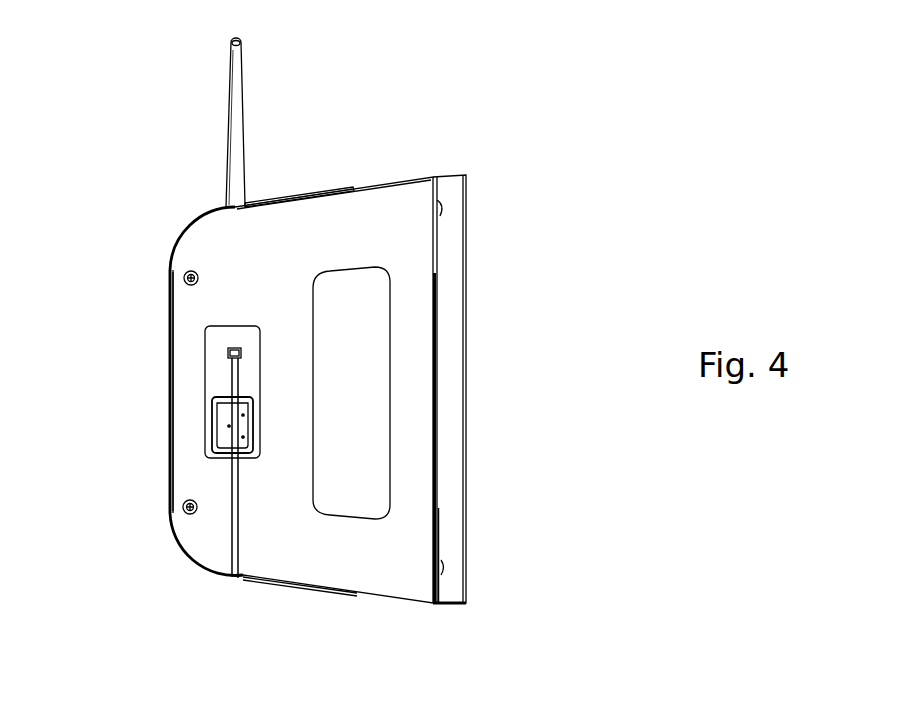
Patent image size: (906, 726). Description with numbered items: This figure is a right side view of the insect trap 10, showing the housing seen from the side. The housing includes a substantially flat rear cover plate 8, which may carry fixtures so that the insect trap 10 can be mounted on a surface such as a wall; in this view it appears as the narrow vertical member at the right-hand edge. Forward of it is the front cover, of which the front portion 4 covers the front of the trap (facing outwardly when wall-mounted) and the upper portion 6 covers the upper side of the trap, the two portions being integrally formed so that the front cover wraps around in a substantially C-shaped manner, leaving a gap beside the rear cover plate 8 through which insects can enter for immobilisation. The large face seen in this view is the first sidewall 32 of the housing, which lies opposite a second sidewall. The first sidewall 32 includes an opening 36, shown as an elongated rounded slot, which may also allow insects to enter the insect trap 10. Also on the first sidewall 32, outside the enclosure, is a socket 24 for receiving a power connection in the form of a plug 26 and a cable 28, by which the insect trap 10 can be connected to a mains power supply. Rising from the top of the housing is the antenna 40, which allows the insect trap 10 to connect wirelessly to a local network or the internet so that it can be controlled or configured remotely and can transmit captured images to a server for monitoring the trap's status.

The insect trap 10 is at (480, 103).
The front portion 4 is at (163, 405).
The upper portion 6 is at (327, 188).
The rear cover plate 8 is at (467, 388).
The socket 24 is at (213, 433).
The plug 26 is at (225, 360).
The cable 28 is at (228, 528).
The first sidewall 32 is at (387, 244).
The opening 36 is at (362, 356).
The antenna 40 is at (247, 133).